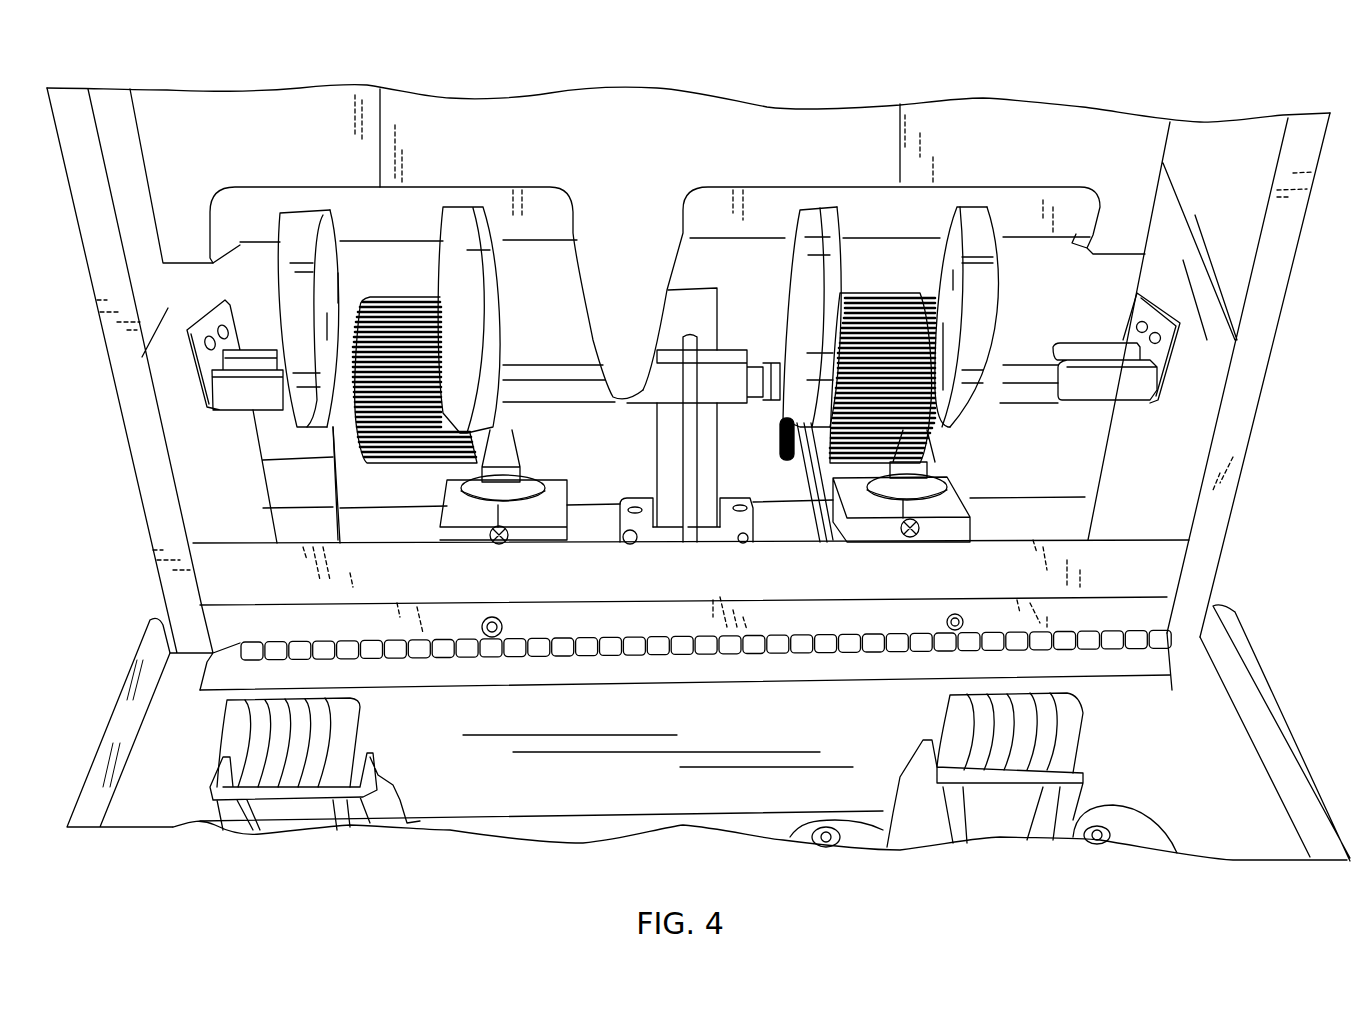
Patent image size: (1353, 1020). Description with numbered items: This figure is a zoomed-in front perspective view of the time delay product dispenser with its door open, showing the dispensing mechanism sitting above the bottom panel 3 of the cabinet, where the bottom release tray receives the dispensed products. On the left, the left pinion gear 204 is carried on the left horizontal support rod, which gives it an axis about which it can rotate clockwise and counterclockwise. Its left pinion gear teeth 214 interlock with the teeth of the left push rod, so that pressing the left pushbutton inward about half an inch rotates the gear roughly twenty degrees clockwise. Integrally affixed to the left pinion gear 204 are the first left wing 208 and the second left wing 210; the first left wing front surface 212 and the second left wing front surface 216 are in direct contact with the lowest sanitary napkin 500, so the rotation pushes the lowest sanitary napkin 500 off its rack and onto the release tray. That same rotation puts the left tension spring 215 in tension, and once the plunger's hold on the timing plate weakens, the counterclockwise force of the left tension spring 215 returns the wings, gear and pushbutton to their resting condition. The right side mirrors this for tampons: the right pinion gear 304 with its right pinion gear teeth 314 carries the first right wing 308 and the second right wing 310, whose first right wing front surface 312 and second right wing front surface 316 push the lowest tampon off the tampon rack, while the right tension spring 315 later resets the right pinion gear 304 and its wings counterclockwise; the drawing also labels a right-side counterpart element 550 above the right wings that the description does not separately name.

The bottom panel 3 is at (1043, 520).
The left pinion gear 204 is at (418, 287).
The first left wing 208 is at (302, 229).
The second left wing 210 is at (465, 230).
The first left wing front surface 212 is at (327, 207).
The left pinion gear teeth 214 is at (383, 297).
The left tension spring 215 is at (347, 455).
The second left wing front surface 216 is at (512, 420).
The right pinion gear 304 is at (866, 290).
The first right wing 308 is at (812, 230).
The second right wing 310 is at (977, 222).
The first right wing front surface 312 is at (841, 205).
The right pinion gear teeth 314 is at (900, 290).
The right tension spring 315 is at (780, 465).
The second right wing front surface 316 is at (957, 207).
The lowest sanitary napkin 500 is at (545, 218).
The second bracket 550 is at (1040, 190).